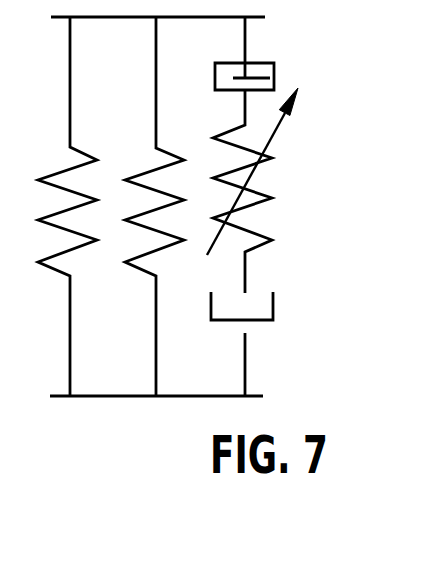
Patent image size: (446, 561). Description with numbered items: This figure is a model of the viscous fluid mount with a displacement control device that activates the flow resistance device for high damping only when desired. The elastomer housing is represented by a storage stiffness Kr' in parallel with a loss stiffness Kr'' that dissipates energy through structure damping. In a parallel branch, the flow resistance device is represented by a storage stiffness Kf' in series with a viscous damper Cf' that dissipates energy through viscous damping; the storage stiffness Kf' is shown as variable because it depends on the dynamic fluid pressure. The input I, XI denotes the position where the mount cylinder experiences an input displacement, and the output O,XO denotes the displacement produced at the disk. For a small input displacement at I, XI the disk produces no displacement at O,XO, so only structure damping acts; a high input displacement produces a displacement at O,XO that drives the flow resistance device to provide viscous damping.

The input position and input displacement I, XI is at (186, 20).
The output position and output displacement O,XO is at (274, 76).
The storage stiffness of housing Kr' is at (55, 206).
The loss stiffness of housing Kr'' is at (147, 206).
The storage stiffness of flow resistance device Kf' is at (268, 190).
The viscous damper Cf' is at (255, 344).